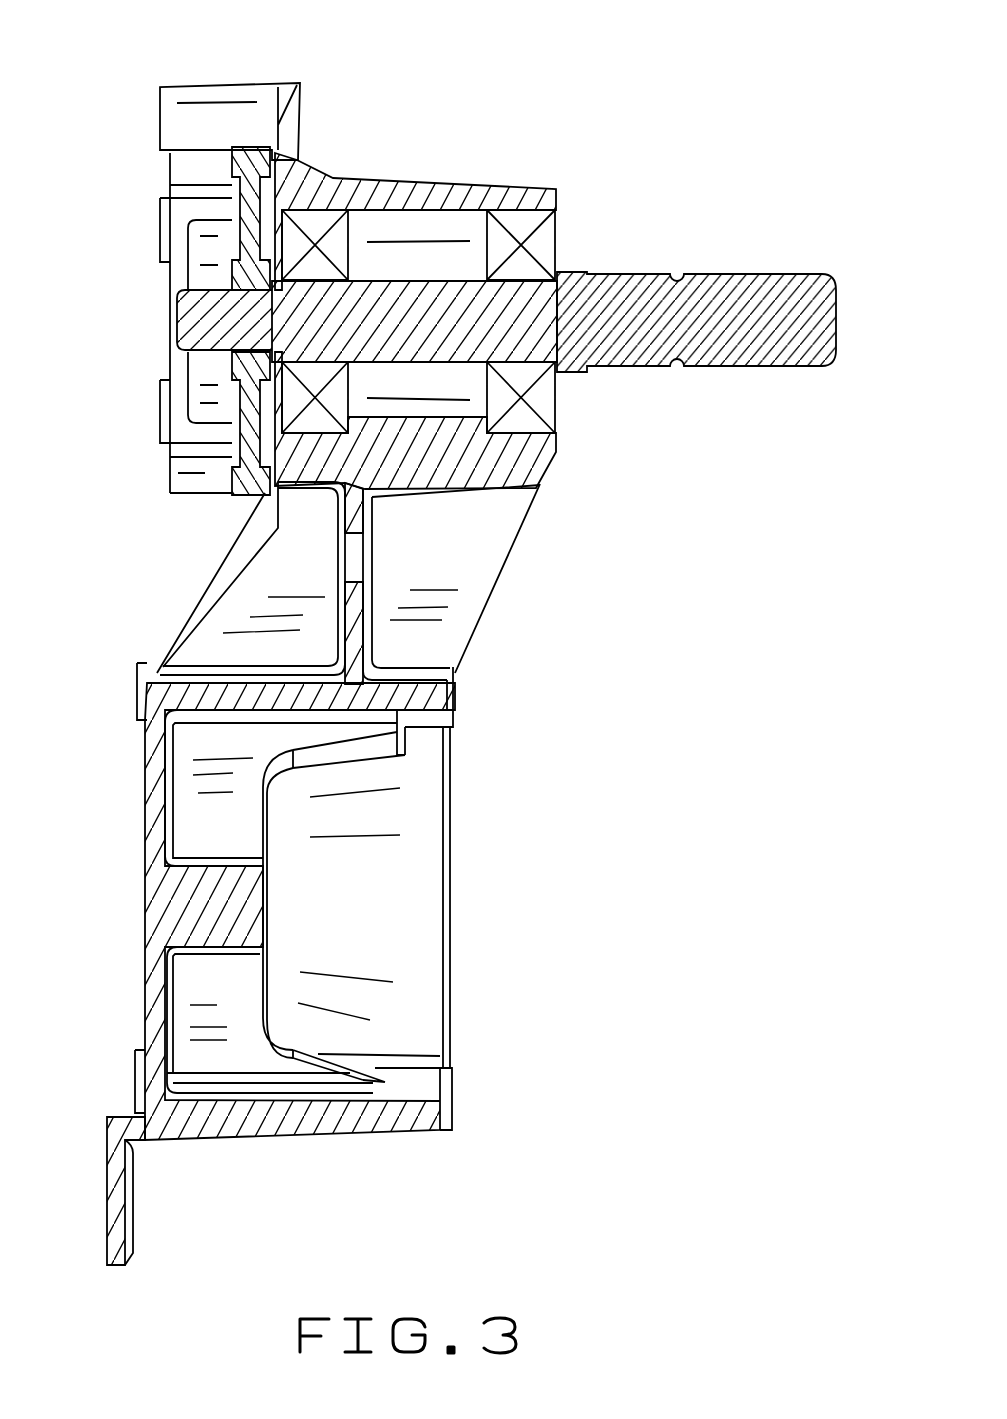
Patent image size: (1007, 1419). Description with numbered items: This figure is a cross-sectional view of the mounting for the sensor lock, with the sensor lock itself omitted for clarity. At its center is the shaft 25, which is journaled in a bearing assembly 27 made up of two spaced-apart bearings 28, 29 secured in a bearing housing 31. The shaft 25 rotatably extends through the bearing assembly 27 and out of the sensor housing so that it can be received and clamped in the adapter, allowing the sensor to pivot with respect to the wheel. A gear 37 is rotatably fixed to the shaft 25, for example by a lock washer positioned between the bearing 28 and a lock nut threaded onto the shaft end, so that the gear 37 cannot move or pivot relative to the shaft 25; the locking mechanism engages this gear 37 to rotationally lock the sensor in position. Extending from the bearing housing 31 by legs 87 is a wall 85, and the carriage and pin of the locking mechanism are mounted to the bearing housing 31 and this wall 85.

The shaft 25 is at (707, 267).
The bearing assembly 27 is at (456, 495).
The bearing 28 is at (316, 413).
The bearing 29 is at (556, 406).
The bearing housing 31 is at (445, 183).
The gear 37 is at (230, 160).
The wall 85 is at (447, 622).
The legs 87 is at (230, 622).